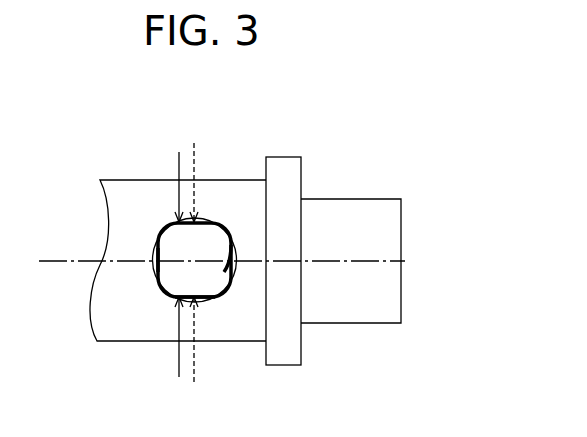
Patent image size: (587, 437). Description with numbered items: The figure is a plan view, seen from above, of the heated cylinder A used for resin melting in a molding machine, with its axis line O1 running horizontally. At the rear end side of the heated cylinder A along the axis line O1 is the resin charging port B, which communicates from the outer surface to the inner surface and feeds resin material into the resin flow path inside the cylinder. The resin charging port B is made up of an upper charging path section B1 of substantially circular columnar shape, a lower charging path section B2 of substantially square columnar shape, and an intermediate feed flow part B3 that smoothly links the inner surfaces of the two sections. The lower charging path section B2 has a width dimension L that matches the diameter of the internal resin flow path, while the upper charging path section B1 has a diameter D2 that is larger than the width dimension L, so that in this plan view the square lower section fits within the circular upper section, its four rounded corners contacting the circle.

The heated cylinder A is at (121, 180).
The axis line O1 is at (405, 261).
The resin charging port B is at (211, 220).
The width dimension L is at (179, 156).
The diameter D2 is at (194, 155).
The upper charging path section B1 is at (235, 265).
The lower charging path section B2 is at (155, 267).
The intermediate feed flow part B3 is at (238, 262).